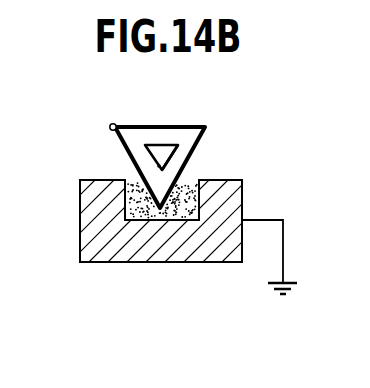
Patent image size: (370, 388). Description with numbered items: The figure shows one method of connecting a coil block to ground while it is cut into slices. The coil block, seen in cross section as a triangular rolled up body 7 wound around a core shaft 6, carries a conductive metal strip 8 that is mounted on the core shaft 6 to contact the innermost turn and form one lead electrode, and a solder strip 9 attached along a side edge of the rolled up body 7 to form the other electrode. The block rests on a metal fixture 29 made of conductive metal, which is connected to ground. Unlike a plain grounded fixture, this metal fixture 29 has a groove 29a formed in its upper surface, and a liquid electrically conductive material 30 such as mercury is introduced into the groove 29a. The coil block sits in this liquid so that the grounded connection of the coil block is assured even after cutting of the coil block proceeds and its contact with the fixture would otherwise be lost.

The core shaft 6 is at (158, 160).
The rolled up body 7 is at (193, 133).
The conductive metal strip 8 is at (175, 158).
The solder strip 9 is at (110, 125).
The metal fixture 29 is at (80, 220).
The groove 29a is at (130, 183).
The liquid electrically conductive material 30 is at (190, 178).